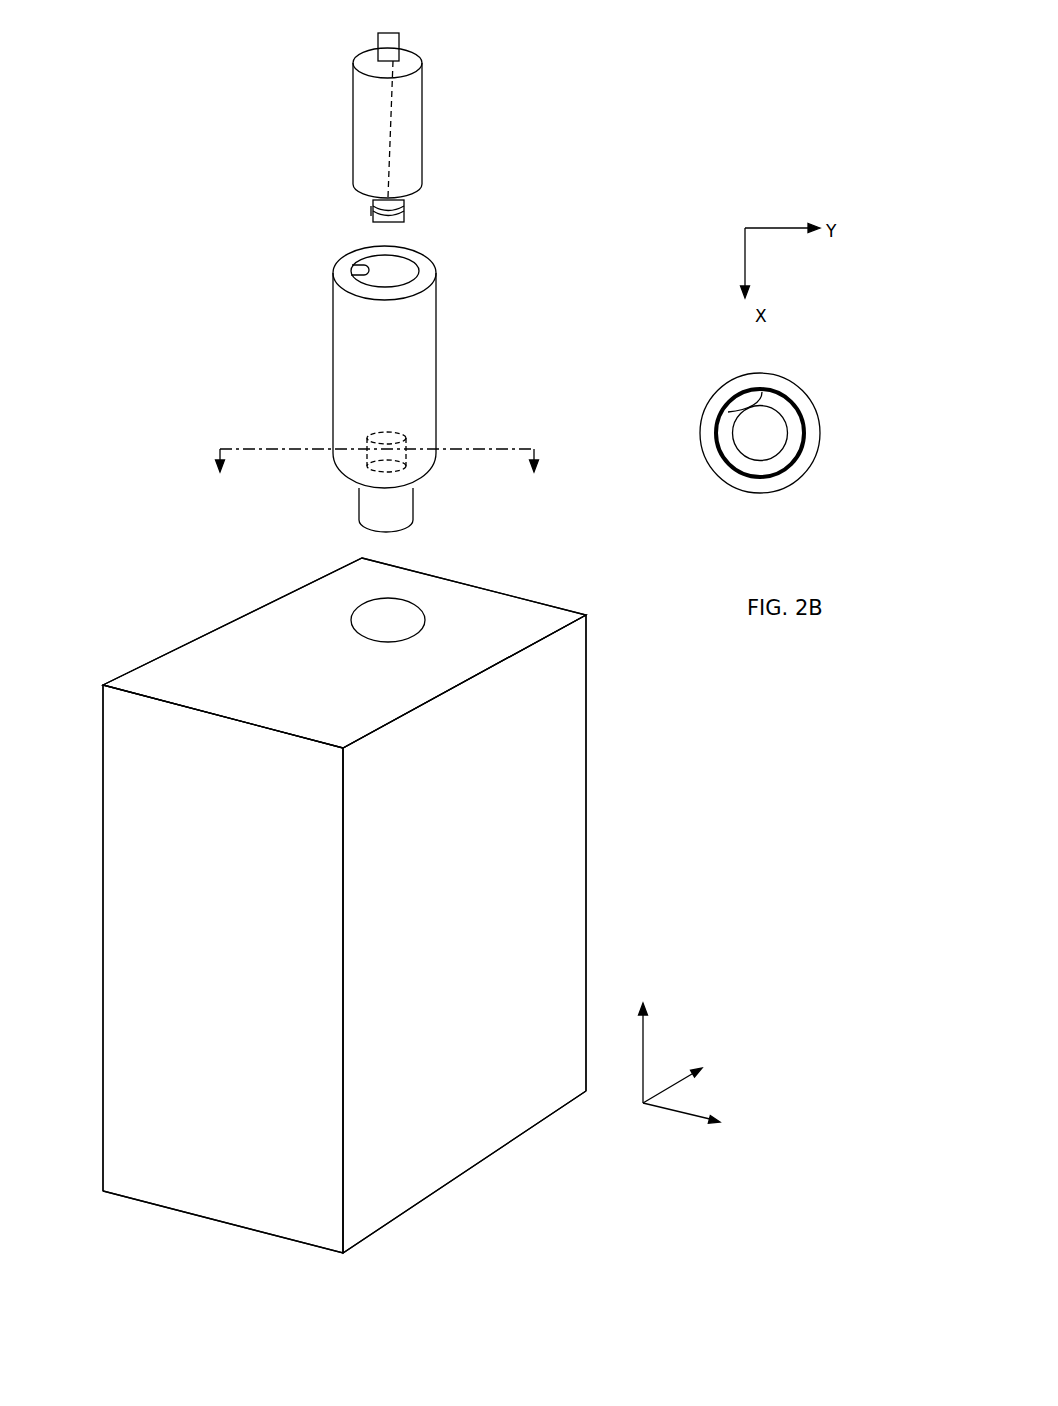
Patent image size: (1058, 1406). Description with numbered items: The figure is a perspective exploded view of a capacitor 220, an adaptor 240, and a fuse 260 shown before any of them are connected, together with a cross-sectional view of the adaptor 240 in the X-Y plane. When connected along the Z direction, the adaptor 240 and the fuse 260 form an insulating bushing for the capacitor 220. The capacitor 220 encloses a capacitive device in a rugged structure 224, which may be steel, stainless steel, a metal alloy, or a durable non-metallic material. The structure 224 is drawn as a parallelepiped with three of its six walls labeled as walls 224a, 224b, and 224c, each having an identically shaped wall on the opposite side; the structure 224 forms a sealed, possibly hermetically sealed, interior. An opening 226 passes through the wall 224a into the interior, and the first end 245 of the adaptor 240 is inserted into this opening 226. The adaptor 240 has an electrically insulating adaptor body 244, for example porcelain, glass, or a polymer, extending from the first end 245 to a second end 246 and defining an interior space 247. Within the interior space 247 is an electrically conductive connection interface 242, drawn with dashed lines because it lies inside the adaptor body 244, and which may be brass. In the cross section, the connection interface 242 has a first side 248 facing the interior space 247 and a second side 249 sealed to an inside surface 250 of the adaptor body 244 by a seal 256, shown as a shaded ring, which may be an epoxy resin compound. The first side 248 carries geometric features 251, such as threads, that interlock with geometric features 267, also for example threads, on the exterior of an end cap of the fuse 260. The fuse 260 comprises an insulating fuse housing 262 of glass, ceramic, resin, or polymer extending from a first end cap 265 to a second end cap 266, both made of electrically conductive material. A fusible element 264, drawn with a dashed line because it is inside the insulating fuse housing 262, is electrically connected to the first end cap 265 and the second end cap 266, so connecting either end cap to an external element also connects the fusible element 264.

In FIG. 2A, the capacitor 220 is at (130, 632).
In FIG. 2A, the structure 224 is at (386, 901).
In FIG. 2A, the wall 224a is at (480, 636).
In FIG. 2A, the wall 224b is at (545, 756).
In FIG. 2A, the wall 224c is at (139, 856).
In FIG. 2A, the opening 226 is at (383, 613).
In FIG. 2A, the adaptor 240 is at (252, 309).
In FIG. 2A, the connection interface 242 is at (405, 437).
In FIG. 2B, the connection interface 242 is at (790, 430).
In FIG. 2A, the adaptor body 244 is at (436, 373).
In FIG. 2B, the adaptor body 244 is at (812, 443).
In FIG. 2A, the first end 245 is at (413, 519).
In FIG. 2A, the second end 246 is at (437, 279).
In FIG. 2A, the interior space 247 is at (393, 266).
In FIG. 2B, the interior space 247 is at (759, 434).
In FIG. 2B, the first side 248 is at (762, 460).
In FIG. 2B, the second side 249 is at (757, 393).
In FIG. 2A, the inside surface 250 is at (366, 270).
In FIG. 2B, the inside surface 250 is at (735, 472).
In FIG. 2A, the geometric features 251 is at (380, 470).
In FIG. 2B, the seal 256 is at (790, 400).
In FIG. 2A, the fuse 260 is at (290, 76).
In FIG. 2A, the insulating fuse housing 262 is at (422, 152).
In FIG. 2A, the fusible element 264 is at (392, 133).
In FIG. 2A, the first end cap 265 is at (404, 214).
In FIG. 2A, the second end cap 266 is at (393, 53).
In FIG. 2A, the geometric features 267 is at (373, 220).